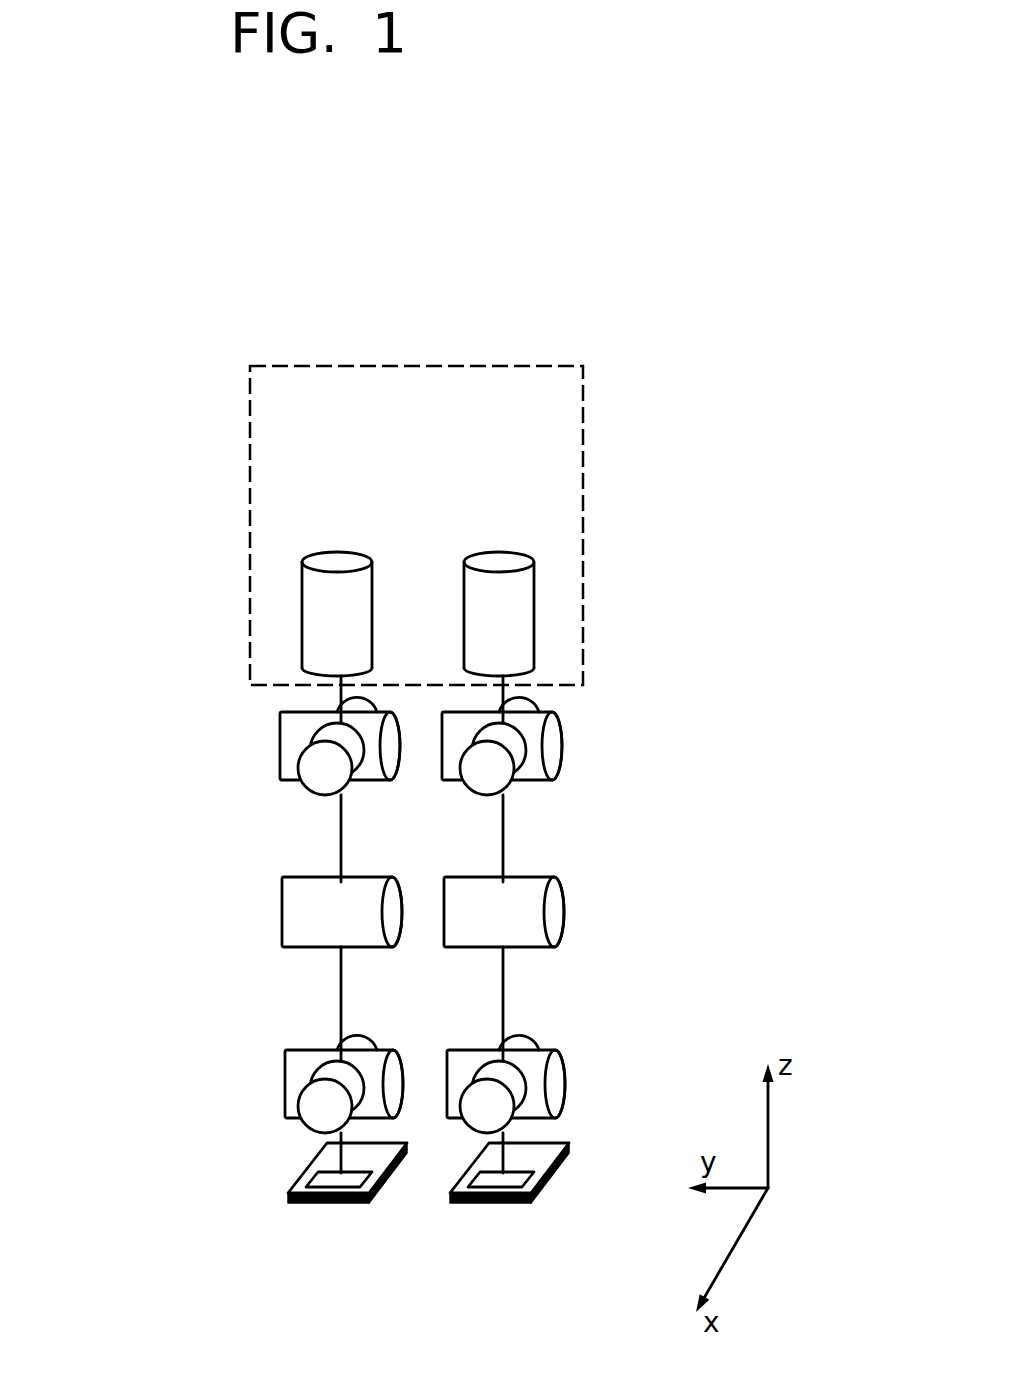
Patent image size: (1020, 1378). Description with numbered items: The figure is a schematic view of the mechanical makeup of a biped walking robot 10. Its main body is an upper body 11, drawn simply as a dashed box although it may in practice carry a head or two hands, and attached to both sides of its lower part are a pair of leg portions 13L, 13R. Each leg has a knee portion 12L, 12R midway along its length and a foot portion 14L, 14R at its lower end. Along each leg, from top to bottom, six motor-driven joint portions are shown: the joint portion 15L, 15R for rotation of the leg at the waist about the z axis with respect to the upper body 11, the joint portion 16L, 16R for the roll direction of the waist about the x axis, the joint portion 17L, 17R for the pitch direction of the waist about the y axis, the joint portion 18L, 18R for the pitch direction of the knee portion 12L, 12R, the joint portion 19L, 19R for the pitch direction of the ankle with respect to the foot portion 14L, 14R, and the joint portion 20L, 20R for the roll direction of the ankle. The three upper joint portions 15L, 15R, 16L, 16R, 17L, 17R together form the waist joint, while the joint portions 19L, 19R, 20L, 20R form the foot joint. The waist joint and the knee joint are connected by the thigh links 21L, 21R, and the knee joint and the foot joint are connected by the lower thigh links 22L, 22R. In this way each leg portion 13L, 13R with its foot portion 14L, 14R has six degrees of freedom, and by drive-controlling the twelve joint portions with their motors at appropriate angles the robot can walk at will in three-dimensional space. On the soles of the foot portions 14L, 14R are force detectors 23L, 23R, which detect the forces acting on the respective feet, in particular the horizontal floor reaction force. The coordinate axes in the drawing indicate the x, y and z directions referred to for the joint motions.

The biped walking robot 10 is at (643, 322).
The upper body 11 is at (583, 430).
The knee portion 12R is at (274, 874).
The knee portion 12L is at (575, 866).
The leg portion 13R is at (125, 597).
The leg portion 13L is at (712, 590).
The foot portion 14R is at (313, 1169).
The foot portion 14L is at (558, 1182).
The joint portion for leg portion rotation of a waist 15R is at (317, 632).
The joint portion for leg portion rotation of a waist 15L is at (513, 621).
The joint portion for roll direction of a waist 16R is at (318, 780).
The joint portion for roll direction of a waist 16L is at (497, 773).
The joint portion for pitch direction of a waist 17R is at (288, 734).
The joint portion for pitch direction of a waist 17L is at (553, 740).
The joint portion for pitch direction of a knee portion 18R is at (285, 917).
The joint portion for pitch direction of a knee portion 18L is at (557, 905).
The joint portion for pitch direction of an ankle portion 19R is at (283, 1085).
The joint portion for pitch direction of an ankle portion 19L is at (558, 1085).
The joint portion for roll direction of an ankle portion 20R is at (322, 1116).
The joint portion for roll direction of an ankle portion 20L is at (498, 1111).
The thigh link 21R is at (340, 835).
The thigh link 21L is at (504, 843).
The lower thigh link 22R is at (342, 995).
The lower thigh link 22L is at (505, 991).
The force detector 23R is at (330, 1182).
The force detector 23L is at (492, 1180).